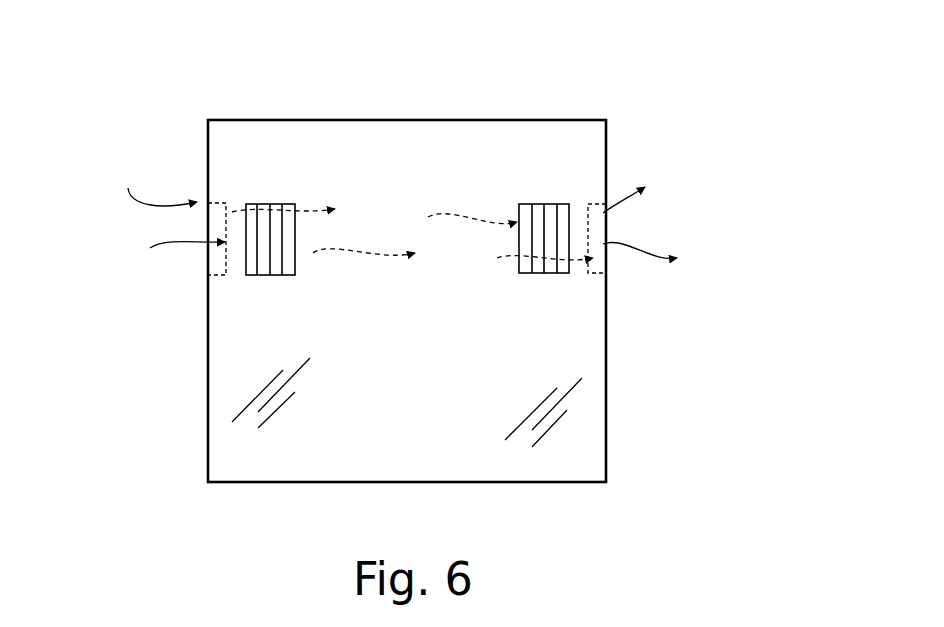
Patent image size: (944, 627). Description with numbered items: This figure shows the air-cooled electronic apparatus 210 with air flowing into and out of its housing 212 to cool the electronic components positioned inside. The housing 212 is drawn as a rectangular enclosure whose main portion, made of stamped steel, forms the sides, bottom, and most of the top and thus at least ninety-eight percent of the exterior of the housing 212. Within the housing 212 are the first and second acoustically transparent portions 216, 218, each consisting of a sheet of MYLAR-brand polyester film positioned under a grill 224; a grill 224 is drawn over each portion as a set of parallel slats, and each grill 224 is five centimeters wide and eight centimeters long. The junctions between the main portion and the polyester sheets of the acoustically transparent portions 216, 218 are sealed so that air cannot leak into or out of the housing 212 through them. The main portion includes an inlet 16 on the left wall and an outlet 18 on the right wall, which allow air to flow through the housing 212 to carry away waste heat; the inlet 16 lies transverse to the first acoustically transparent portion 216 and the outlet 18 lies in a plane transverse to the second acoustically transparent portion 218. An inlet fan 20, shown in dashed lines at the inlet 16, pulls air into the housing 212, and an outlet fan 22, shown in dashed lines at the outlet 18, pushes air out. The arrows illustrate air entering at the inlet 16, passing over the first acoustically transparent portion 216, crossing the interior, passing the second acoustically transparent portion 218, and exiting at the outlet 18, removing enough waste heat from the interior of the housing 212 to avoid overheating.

The air-cooled electronic apparatus 210 is at (670, 108).
The housing 212 is at (625, 392).
The inlet fan 20 is at (218, 195).
The outlet fan 22 is at (598, 190).
The first acoustically transparent portion 216 is at (273, 278).
The second acoustically transparent portion 218 is at (537, 282).
The grill 224 is at (283, 192).
The inlet 16 is at (198, 265).
The outlet 18 is at (627, 223).